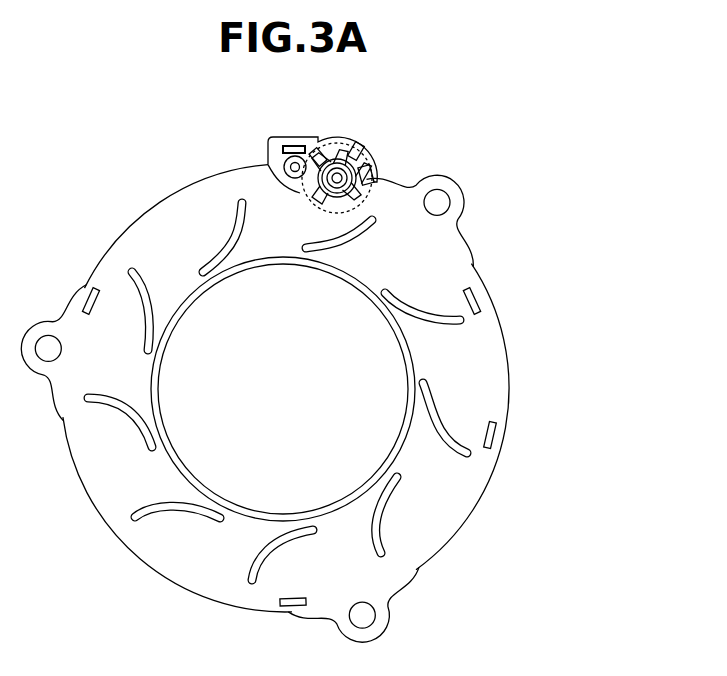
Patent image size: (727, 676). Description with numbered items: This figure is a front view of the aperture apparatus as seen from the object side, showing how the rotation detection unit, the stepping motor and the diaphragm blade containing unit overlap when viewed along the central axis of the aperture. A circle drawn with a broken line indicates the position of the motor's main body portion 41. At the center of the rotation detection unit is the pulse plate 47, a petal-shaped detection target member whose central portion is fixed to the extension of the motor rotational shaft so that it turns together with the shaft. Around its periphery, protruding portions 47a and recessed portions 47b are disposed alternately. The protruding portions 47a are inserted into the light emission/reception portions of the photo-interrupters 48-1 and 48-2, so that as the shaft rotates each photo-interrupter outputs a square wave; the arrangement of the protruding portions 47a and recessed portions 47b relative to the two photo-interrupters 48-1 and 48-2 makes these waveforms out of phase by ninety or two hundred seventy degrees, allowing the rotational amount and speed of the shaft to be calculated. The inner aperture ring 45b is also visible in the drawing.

The main body portion 41 is at (329, 142).
The inner ring aperture 45b is at (277, 262).
The pulse plate 47 is at (342, 196).
The protruding portions 47a is at (282, 187).
The recessed portions 47b is at (325, 193).
The photo-interrupter 48-1 is at (350, 143).
The photo-interrupter 48-2 is at (372, 163).